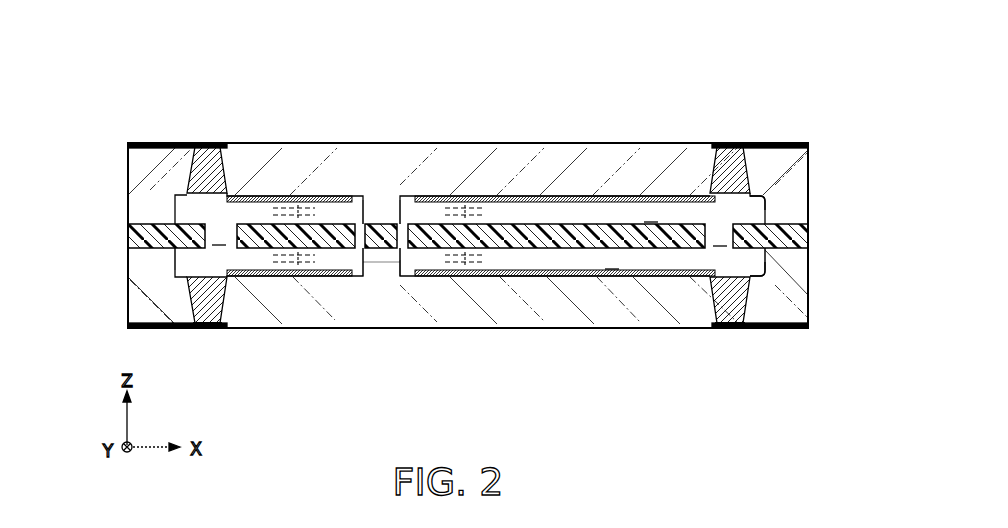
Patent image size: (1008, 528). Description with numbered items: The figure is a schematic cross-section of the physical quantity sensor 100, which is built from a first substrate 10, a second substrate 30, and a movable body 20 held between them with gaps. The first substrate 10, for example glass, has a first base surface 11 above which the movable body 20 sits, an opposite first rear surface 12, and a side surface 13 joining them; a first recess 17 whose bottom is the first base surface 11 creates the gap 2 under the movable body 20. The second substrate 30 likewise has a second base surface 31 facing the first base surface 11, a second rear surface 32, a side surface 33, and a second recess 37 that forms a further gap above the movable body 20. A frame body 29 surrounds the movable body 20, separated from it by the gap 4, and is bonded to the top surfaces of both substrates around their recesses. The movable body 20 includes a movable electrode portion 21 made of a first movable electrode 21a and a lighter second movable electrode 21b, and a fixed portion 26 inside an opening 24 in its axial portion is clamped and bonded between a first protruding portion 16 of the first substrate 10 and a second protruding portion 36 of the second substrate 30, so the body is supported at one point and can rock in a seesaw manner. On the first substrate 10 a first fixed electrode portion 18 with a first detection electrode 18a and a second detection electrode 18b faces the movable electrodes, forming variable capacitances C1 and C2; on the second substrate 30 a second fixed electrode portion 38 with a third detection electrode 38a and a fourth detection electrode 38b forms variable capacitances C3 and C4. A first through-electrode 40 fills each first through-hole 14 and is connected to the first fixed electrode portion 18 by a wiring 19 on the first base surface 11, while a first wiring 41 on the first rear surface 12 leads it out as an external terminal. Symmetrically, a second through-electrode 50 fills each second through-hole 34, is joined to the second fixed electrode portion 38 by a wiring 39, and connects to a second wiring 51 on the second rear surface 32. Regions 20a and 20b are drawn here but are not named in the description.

The physical quantity sensor 100 is at (735, 50).
The gap 2 is at (612, 259).
The gap 4 is at (469, 235).
The first substrate 10 is at (648, 306).
The first base surface 11 is at (404, 272).
The first rear surface 12 is at (514, 292).
The side surface 13 is at (812, 290).
The first through-hole 14 is at (203, 328).
The first protruding portion 16 is at (379, 249).
The first recess 17 is at (767, 272).
The first fixed electrode portion 18 is at (471, 329).
The first detection electrode 18a is at (455, 279).
The second detection electrode 18b is at (312, 279).
The wiring 19 is at (246, 300).
The movable body 20 is at (496, 330).
The second cavity portion 20a is at (557, 282).
The second cavity portion 20b is at (276, 286).
The movable electrode portion 21 is at (496, 146).
The first movable electrode 21a is at (522, 182).
The second movable electrode 21b is at (270, 192).
The opening 24 is at (358, 263).
The fixed portion 26 is at (392, 232).
The frame body 29 is at (469, 296).
The second substrate 30 is at (648, 166).
The second base surface 31 is at (598, 208).
The second rear surface 32 is at (612, 192).
The side surface 33 is at (813, 190).
The second through-hole 34 is at (200, 146).
The second protruding portion 36 is at (367, 212).
The second recess 37 is at (767, 198).
The second fixed electrode portion 38 is at (471, 155).
The third detection electrode 38a is at (452, 197).
The fourth detection electrode 38b is at (305, 197).
The wiring 39 is at (250, 178).
The first through-electrode 40 is at (216, 327).
The first wiring 41 is at (163, 331).
The second through-electrode 50 is at (216, 146).
The second wiring 51 is at (152, 143).
The variable capacitance C1 is at (479, 260).
The variable capacitance C2 is at (308, 260).
The variable capacitance C3 is at (479, 214).
The variable capacitance C4 is at (308, 213).